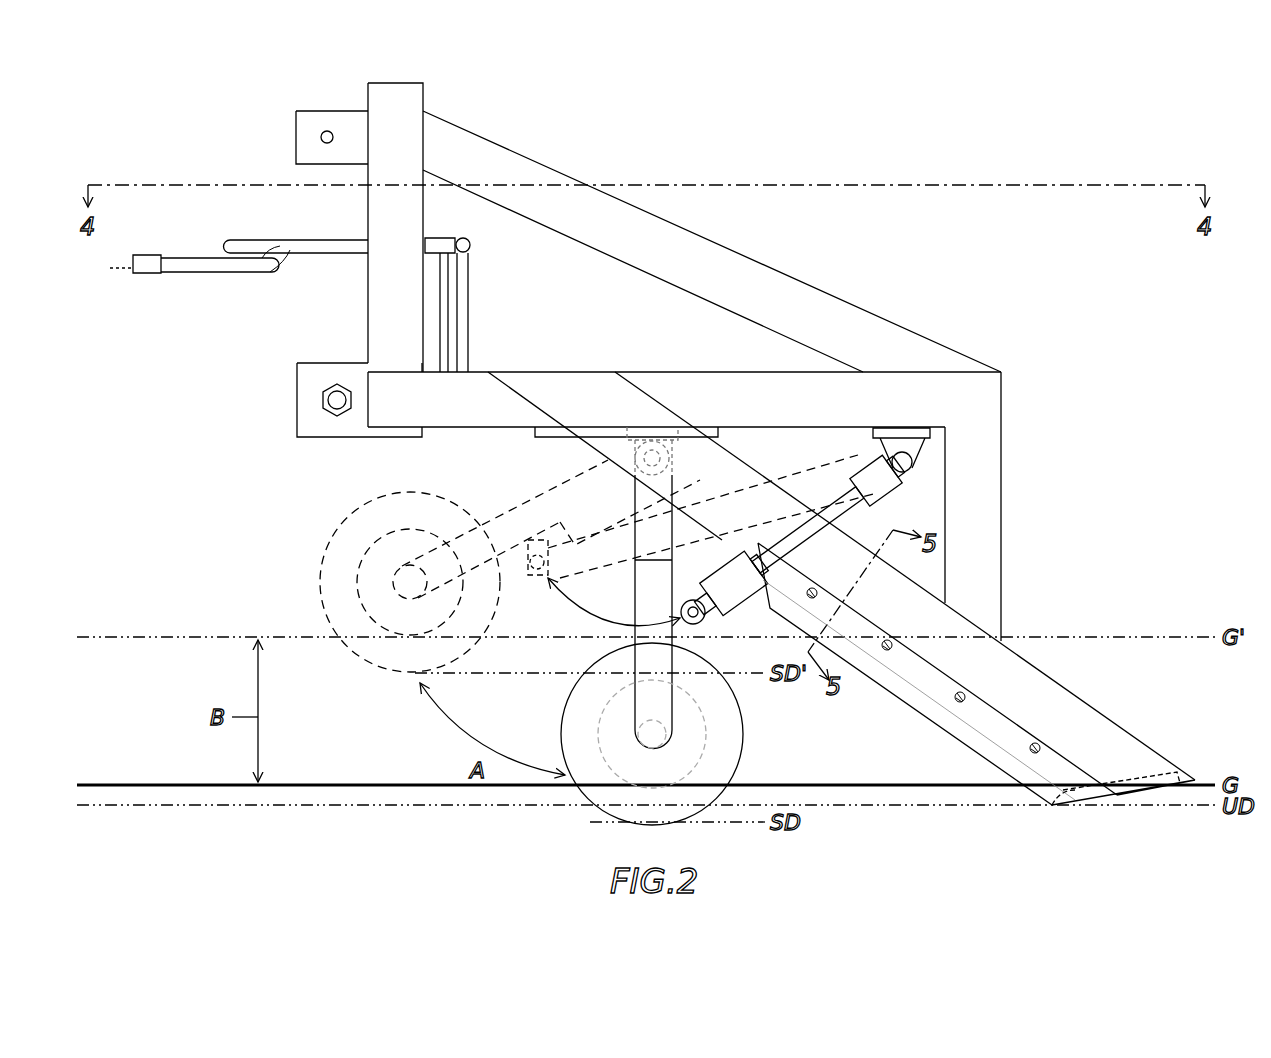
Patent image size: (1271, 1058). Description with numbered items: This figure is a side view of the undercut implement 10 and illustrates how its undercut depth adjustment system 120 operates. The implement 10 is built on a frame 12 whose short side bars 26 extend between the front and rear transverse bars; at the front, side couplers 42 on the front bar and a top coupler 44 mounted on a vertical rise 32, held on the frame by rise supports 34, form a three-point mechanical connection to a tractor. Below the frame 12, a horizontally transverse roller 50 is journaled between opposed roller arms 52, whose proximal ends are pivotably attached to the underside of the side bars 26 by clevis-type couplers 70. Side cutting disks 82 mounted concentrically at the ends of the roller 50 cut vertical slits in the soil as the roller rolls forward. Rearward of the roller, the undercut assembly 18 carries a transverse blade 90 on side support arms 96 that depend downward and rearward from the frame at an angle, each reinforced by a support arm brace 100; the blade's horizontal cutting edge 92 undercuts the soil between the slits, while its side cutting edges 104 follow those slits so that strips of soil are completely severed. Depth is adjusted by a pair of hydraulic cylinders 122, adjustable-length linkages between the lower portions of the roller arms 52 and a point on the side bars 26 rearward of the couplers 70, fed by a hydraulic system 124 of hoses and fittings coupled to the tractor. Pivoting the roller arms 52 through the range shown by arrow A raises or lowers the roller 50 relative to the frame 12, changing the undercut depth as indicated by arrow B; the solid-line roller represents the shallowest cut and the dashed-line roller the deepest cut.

The implement 10 is at (250, 440).
The frame 12 is at (1050, 390).
The undercut assembly 18 is at (1085, 668).
The side bars 26 is at (684, 399).
The vertical rise 32 is at (425, 92).
The rise supports 34 is at (690, 241).
The side couplers 42 is at (297, 403).
The top coupler 44 is at (296, 143).
The roller 50 is at (712, 730).
The roller arms 52 is at (551, 594).
The couplers 70 is at (600, 437).
The side cutting disks 82 is at (741, 696).
The transverse blade 90 is at (1142, 806).
The horizontal cutting edge 92 is at (1062, 810).
The side support arms 96 is at (937, 674).
The support arm brace 100 is at (973, 506).
The side cutting edges 104 is at (915, 708).
The undercut depth adjustment system 120 is at (838, 440).
The hydraulic cylinders 122 is at (728, 619).
The hydraulic system 124 is at (497, 332).